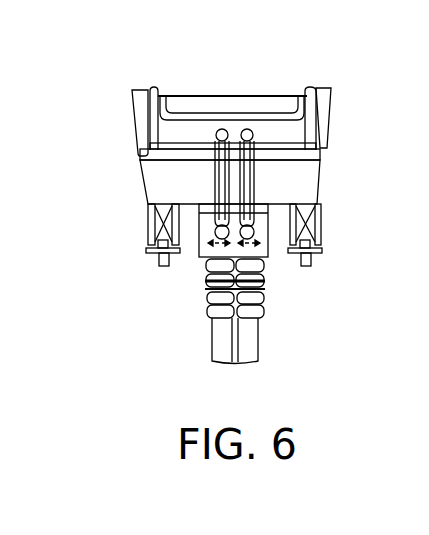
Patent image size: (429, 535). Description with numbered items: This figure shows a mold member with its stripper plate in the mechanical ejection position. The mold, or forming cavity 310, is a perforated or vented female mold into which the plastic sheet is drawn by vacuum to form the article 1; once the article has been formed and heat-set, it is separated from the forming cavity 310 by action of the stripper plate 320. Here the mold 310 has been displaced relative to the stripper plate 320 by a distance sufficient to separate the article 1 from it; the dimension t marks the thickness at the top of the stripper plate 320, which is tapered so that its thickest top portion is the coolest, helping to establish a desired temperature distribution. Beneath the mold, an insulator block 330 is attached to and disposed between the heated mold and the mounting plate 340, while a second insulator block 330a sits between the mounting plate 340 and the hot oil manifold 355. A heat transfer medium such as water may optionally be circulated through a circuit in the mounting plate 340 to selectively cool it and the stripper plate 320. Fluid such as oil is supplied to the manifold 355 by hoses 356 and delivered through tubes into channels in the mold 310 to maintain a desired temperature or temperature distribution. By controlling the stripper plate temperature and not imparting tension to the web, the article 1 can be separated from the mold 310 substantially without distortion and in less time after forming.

The article 1 is at (194, 98).
The thickness of shell t is at (132, 97).
The forming cavity 310 is at (267, 109).
The stripper plate 320 is at (340, 98).
The insulator block 330 is at (322, 154).
The insulator block 330a is at (258, 203).
The mounting plate 340 is at (330, 193).
The manifold 355 is at (277, 262).
The hoses 356 is at (272, 355).